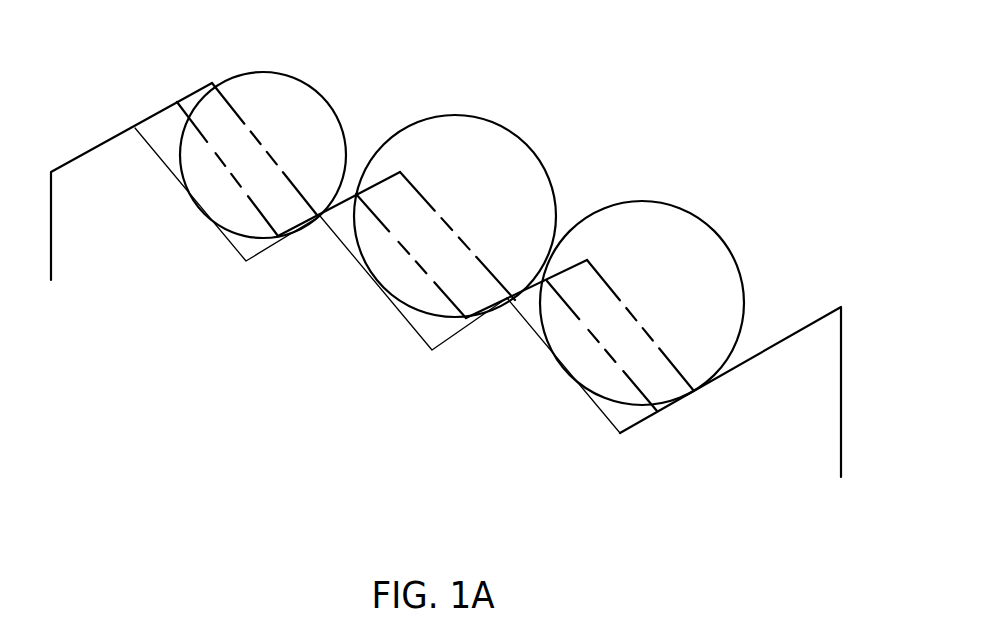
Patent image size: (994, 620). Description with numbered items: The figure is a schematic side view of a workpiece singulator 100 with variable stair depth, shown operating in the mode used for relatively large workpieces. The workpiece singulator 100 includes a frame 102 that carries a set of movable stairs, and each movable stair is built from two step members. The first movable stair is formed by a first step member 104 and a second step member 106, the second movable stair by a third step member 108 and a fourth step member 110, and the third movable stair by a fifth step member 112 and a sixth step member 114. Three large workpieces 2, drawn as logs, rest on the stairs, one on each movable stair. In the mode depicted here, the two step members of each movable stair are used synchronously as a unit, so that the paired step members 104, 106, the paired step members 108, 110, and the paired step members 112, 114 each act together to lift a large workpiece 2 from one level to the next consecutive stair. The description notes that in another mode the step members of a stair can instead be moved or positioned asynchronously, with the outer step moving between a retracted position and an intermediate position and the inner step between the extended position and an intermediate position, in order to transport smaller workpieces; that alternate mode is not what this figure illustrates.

The workpiece 2 is at (300, 121).
The workpiece singulator 100 is at (160, 383).
The frame 102 is at (98, 192).
The first step member 104 is at (667, 407).
The second step member 106 is at (623, 430).
The third step member 108 is at (483, 322).
The fourth step member 110 is at (442, 340).
The fifth step member 112 is at (189, 110).
The sixth step member 114 is at (137, 122).